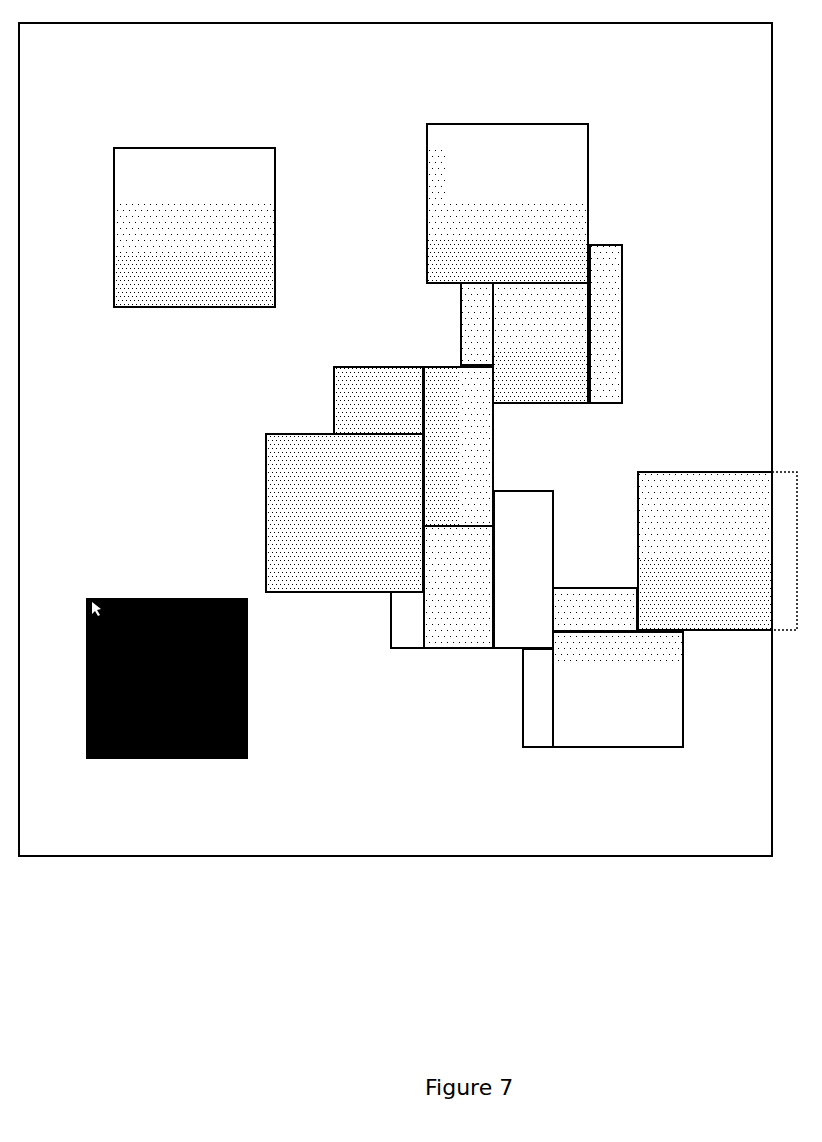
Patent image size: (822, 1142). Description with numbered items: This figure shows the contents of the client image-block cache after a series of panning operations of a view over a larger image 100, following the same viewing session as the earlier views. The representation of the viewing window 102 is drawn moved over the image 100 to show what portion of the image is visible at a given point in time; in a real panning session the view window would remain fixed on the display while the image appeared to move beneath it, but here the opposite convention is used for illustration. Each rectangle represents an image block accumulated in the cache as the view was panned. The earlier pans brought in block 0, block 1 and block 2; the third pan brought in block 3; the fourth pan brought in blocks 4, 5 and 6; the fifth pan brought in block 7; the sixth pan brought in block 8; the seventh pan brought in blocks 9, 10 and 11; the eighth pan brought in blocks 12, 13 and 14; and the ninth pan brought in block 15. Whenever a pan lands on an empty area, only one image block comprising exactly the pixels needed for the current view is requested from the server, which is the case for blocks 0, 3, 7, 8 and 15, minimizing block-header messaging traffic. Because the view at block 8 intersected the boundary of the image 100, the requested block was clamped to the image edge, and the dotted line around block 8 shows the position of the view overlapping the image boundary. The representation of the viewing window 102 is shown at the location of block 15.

The image 100 is at (395, 439).
The representation of the viewing window 102 is at (226, 678).
The image block 0 is at (344, 513).
The image block 1 is at (378, 400).
The image block 2 is at (458, 446).
The image block 3 is at (507, 203).
The image block 4 is at (477, 324).
The image block 5 is at (540, 343).
The image block 6 is at (606, 324).
The image block 7 is at (194, 227).
The image block 8 is at (717, 551).
The image block 9 is at (407, 620).
The image block 10 is at (523, 569).
The image block 11 is at (458, 587).
The image block 12 is at (538, 698).
The image block 13 is at (595, 609).
The image block 14 is at (618, 689).
The image block 15 is at (167, 678).